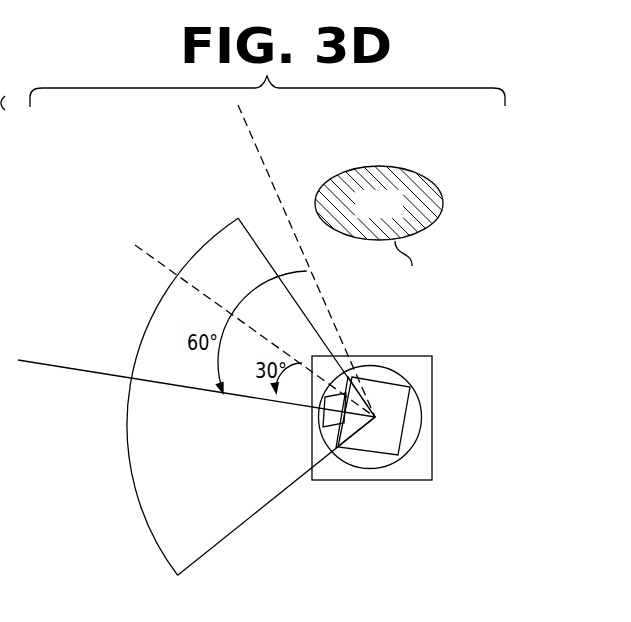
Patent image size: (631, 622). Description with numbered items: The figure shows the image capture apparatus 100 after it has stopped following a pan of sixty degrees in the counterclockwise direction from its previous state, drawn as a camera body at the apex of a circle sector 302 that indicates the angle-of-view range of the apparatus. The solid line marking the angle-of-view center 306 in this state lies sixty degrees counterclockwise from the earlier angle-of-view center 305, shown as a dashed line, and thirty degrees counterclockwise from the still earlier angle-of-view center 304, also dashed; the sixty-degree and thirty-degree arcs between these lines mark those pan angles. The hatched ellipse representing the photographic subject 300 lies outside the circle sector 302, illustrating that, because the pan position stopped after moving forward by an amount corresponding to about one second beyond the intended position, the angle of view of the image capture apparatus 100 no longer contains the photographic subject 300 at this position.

The image capture apparatus 100 is at (432, 455).
The photographic subject 300 is at (411, 245).
The circle sector 302 is at (248, 522).
The angle-of-view center 304 is at (151, 250).
The angle-of-view center 305 is at (250, 128).
The angle-of-view center 306 is at (48, 363).